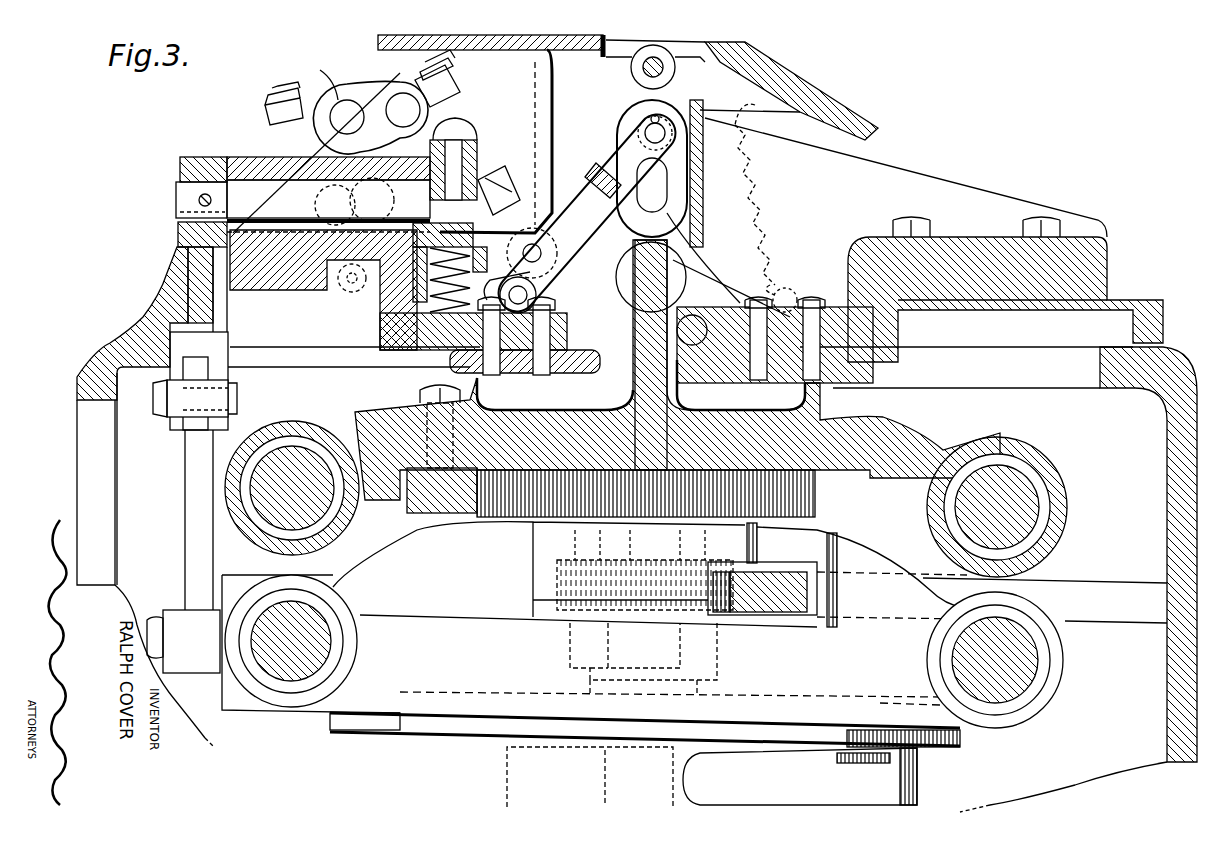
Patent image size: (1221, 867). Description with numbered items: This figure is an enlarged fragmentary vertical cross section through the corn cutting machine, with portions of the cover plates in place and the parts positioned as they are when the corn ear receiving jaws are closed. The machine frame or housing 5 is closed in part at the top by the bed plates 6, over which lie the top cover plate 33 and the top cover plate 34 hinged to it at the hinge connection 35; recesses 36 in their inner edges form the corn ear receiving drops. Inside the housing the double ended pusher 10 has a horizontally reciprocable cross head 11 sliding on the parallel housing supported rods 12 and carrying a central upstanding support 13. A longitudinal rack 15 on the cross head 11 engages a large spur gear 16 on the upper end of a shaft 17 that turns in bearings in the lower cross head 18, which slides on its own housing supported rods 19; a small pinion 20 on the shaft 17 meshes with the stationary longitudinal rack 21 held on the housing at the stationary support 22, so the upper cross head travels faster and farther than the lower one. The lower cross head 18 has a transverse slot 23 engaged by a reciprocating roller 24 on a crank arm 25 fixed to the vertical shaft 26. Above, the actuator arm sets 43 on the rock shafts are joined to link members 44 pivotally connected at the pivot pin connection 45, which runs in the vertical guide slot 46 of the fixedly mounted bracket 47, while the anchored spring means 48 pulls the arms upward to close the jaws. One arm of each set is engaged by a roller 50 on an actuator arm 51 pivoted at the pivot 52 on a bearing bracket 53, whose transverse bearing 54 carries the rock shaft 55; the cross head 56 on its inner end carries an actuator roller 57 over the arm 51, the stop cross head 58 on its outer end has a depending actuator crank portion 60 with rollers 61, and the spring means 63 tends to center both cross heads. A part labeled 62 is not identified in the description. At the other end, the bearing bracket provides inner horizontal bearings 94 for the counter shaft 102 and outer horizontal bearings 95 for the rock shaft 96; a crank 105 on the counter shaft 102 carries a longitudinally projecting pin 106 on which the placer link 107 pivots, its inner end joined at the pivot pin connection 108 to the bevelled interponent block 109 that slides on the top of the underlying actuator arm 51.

The machine frame or housing 5 is at (117, 343).
The top or bed plates 6 is at (160, 302).
The double ended pusher or corn ear advancing means 10 is at (700, 270).
The cross head 11 is at (905, 438).
The housing supported rods 12 is at (297, 450).
The central upstanding support 13 is at (715, 290).
The longitudinal rack 15 is at (468, 515).
The large spur gear 16 is at (530, 517).
The shaft 17 is at (570, 650).
The lower cross head 18 is at (415, 722).
The housing supported rods 19 is at (296, 680).
The small pinion 20 is at (557, 585).
The longitudinal rack 21 is at (775, 614).
The stationary support 22 is at (1115, 622).
The transverse slot 23 is at (352, 730).
The reciprocating roller 24 is at (935, 752).
The crank arm 25 is at (917, 790).
The vertical shaft 26 is at (605, 778).
The top cover plate 33 is at (828, 108).
The top cover plate 34 is at (380, 35).
The hinge connection 35 is at (655, 56).
The recesses 36 is at (566, 70).
The actuator arm sets 43 is at (540, 298).
The link members 44 is at (610, 162).
The pivot pin connection 45 is at (645, 128).
The vertical guide slot 46 is at (652, 200).
The fixedly mounted bracket 47 is at (928, 185).
The anchored spring means 48 is at (775, 195).
The roller 50 is at (540, 240).
The actuator arm 51 is at (410, 298).
The pivot 52 is at (335, 288).
The bearing bracket 53 is at (270, 270).
The transverse bearing 54 is at (255, 158).
The rock shaft 55 is at (243, 190).
The cross head 56 is at (480, 160).
The actuator roller 57 is at (462, 125).
The cross head 58 is at (192, 160).
The depending actuator crank portion 60 is at (190, 266).
The rollers 61 is at (190, 425).
The post 62 is at (185, 472).
The spring means 63 is at (385, 330).
The inner horizontal bearings 94 is at (430, 50).
The outer horizontal bearings 95 is at (305, 98).
The rock shaft 96 is at (319, 69).
The counter shaft 102 is at (385, 84).
The crank 105 is at (462, 90).
The longitudinally projecting pin 106 is at (333, 136).
The placer link 107 is at (395, 123).
The pivot pin connection 108 is at (503, 184).
The interponent block 109 is at (587, 173).